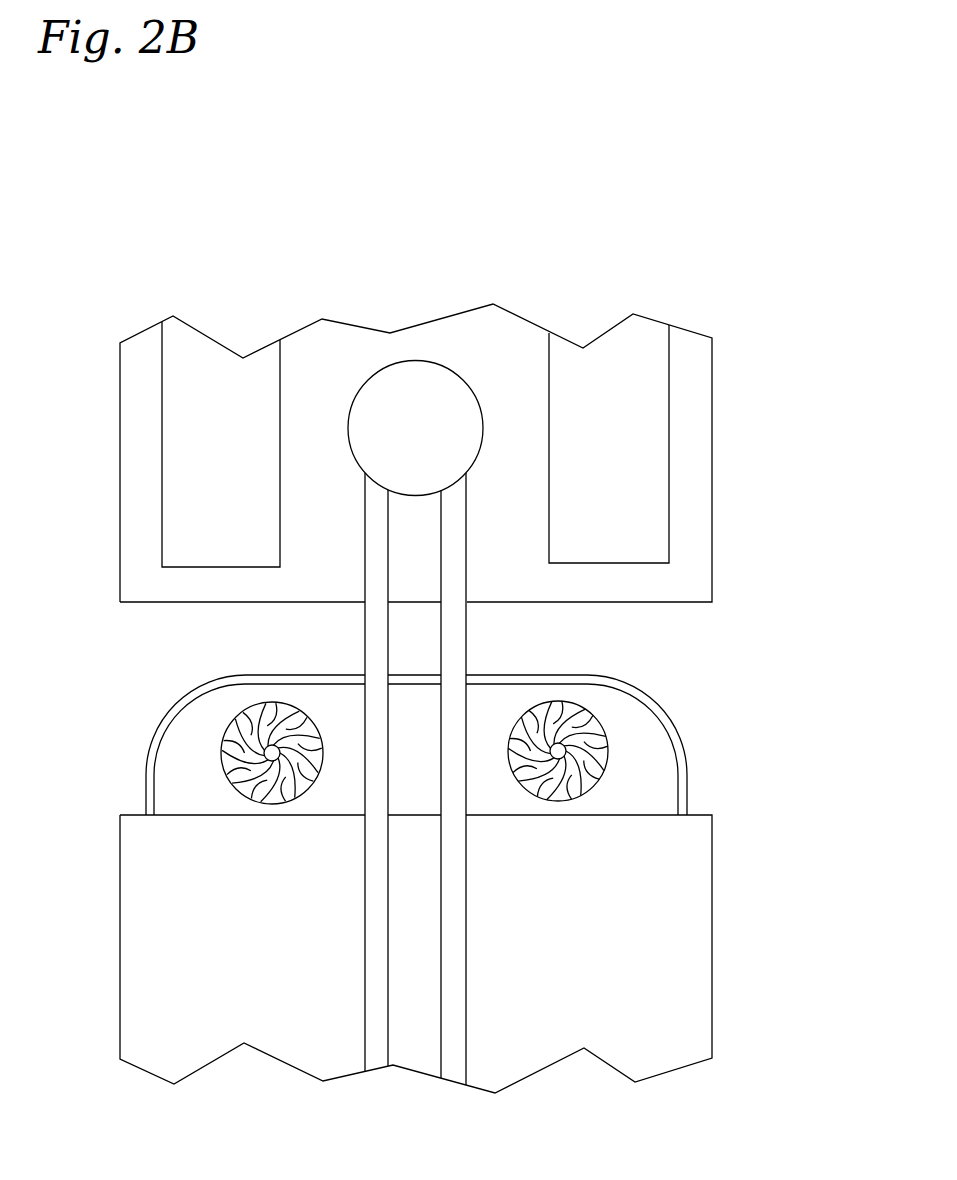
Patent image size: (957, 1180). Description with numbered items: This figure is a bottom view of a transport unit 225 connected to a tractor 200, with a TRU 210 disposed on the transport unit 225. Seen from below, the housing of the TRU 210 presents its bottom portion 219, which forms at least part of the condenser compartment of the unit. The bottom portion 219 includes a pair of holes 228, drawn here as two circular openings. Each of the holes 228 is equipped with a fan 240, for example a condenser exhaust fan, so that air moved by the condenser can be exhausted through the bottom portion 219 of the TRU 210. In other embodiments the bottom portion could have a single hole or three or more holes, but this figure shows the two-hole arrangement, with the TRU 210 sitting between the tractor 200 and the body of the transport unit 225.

The tractor 200 is at (712, 422).
The TRU 210 is at (628, 685).
The bottom portion 219 is at (640, 755).
The holes 228 is at (248, 707).
The fan 240 is at (237, 762).
The transport unit 225 is at (120, 878).